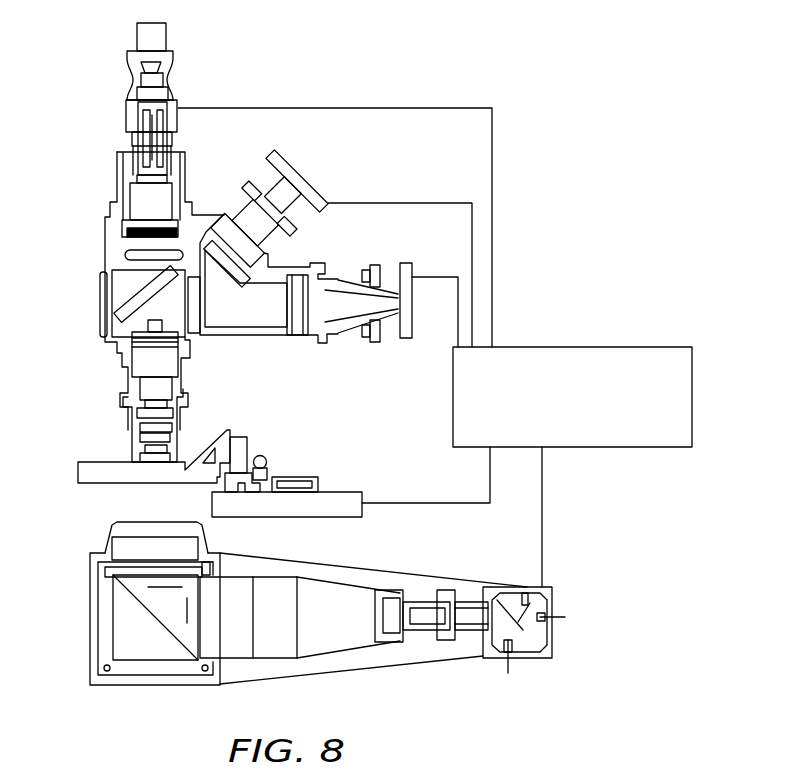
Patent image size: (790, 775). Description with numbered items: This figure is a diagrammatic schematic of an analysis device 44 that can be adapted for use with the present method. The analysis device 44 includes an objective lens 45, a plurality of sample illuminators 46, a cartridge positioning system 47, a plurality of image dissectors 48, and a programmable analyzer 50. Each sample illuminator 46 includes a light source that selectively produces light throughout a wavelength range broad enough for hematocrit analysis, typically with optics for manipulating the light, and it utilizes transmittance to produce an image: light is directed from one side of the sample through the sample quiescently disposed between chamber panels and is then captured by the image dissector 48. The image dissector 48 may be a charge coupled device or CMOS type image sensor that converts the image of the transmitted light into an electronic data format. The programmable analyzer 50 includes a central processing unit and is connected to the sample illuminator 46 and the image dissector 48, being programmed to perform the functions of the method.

The analysis device 44 is at (360, 312).
The objective lens 45 is at (120, 427).
The sample illuminator 46 is at (115, 176).
The cartridge positioning system 47 is at (276, 457).
The image dissector 48 is at (298, 170).
The programmable analyzer 50 is at (607, 447).